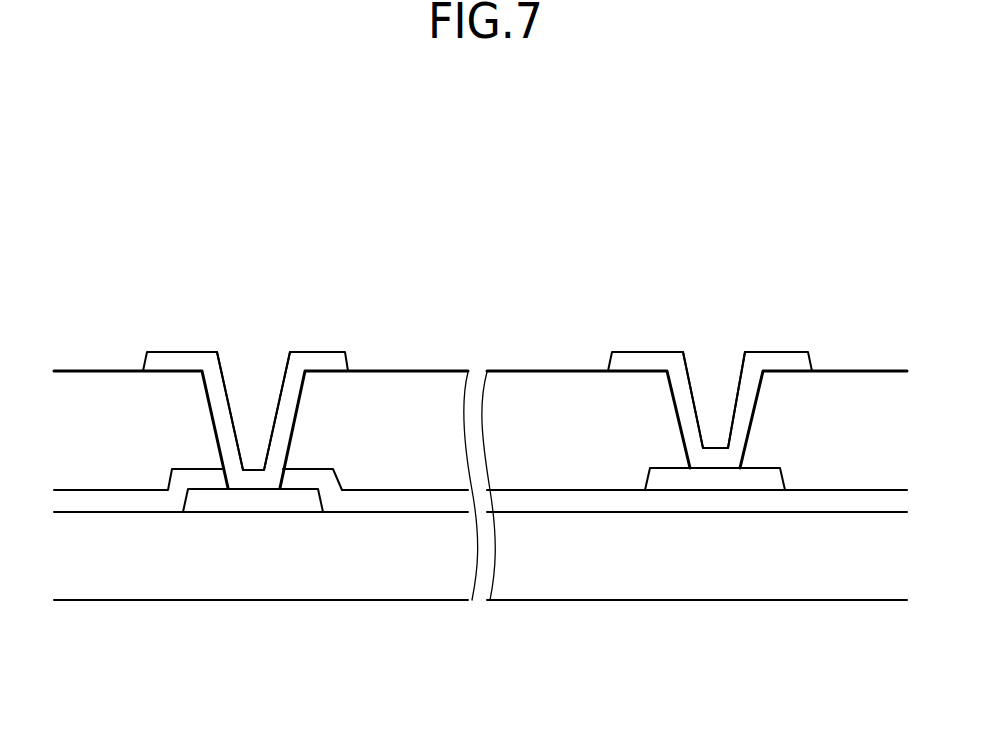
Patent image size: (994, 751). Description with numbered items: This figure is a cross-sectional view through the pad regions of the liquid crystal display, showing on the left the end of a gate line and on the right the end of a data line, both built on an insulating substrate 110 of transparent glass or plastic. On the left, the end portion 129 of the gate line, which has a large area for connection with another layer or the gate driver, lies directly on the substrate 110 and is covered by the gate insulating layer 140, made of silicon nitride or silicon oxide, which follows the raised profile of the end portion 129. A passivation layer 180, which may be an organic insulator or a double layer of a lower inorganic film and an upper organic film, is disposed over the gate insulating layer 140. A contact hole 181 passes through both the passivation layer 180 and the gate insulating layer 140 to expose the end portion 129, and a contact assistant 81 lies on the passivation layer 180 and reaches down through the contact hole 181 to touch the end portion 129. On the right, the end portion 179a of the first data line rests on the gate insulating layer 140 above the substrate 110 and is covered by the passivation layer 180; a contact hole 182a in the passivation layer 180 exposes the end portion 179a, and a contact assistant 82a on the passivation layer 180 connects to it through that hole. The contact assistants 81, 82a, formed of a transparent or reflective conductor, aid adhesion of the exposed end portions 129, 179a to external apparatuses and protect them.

The insulating substrate 110 is at (179, 557).
The end portion of gate line 129 is at (253, 500).
The gate insulating layer 140 is at (348, 502).
The end portion of first data line 179a is at (695, 480).
The passivation layer 180 is at (102, 432).
The contact hole 181 is at (210, 403).
The contact assistant 81 is at (317, 358).
The contact hole 182a is at (678, 415).
The contact assistant 82a is at (778, 362).